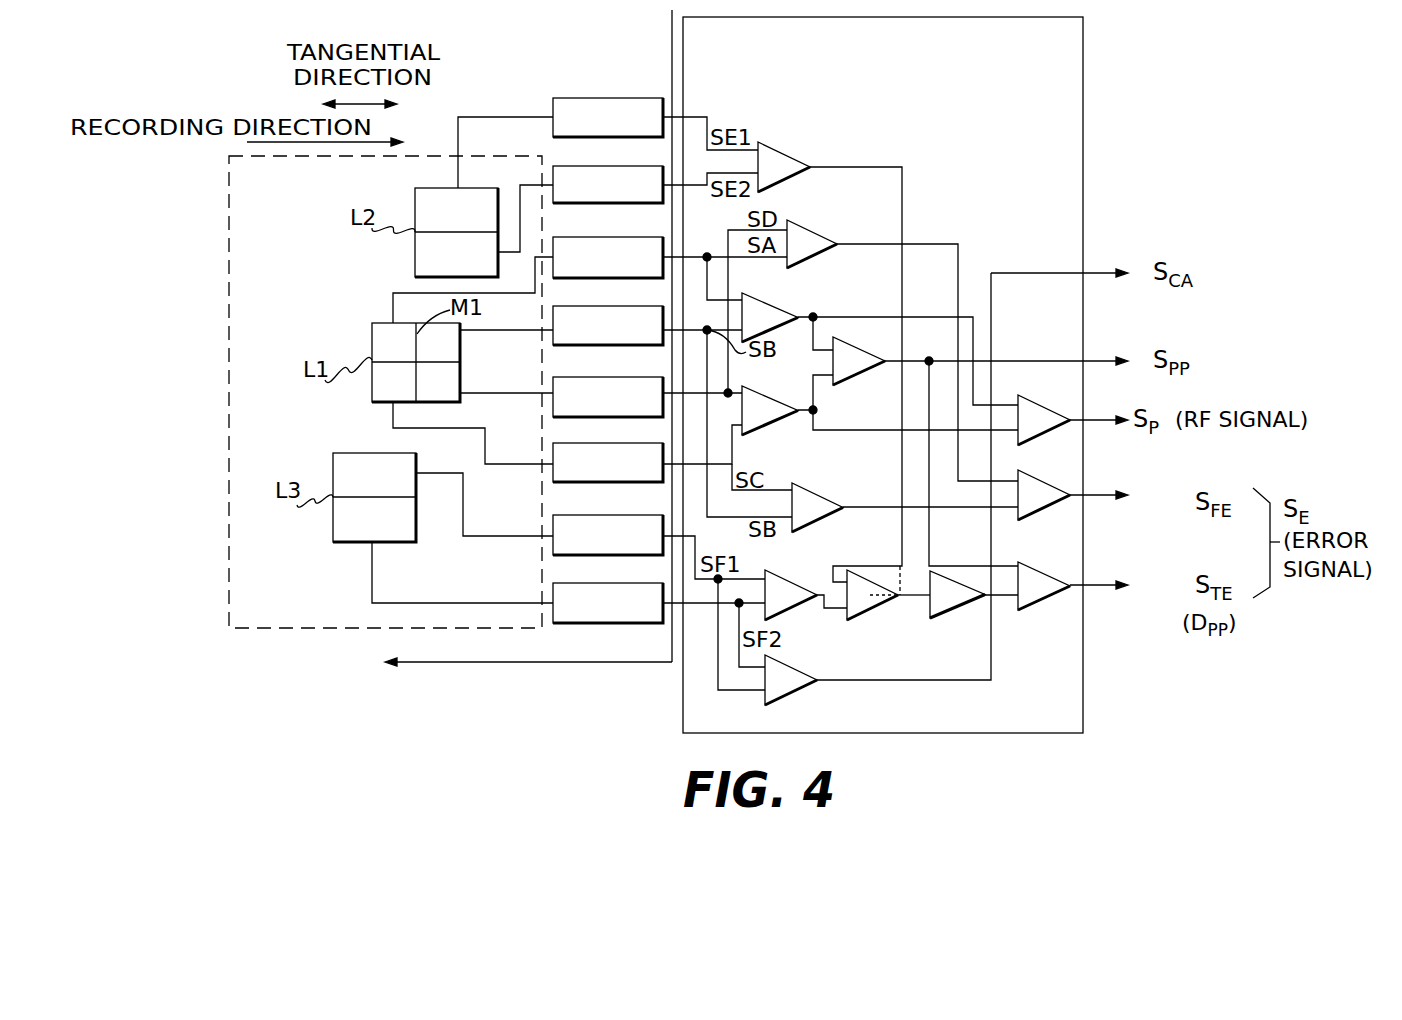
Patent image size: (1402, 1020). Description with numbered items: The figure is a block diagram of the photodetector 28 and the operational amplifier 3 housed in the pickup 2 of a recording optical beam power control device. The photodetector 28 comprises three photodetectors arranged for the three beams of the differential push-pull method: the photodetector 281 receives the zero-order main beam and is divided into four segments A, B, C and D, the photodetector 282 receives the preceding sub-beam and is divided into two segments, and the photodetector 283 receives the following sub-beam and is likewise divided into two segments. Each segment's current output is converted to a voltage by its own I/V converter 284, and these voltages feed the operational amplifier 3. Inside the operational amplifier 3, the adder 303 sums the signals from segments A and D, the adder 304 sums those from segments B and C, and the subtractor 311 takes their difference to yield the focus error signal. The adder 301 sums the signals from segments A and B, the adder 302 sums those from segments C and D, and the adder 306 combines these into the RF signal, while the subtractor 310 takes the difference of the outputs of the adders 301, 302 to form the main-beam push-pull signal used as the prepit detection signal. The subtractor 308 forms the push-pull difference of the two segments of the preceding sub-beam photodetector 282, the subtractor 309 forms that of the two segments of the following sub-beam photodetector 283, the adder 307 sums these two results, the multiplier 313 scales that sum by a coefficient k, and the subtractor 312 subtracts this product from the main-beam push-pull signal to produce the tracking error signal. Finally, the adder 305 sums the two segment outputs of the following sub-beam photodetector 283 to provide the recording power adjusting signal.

The pickup 2 is at (532, 664).
The operational amplifier 3 is at (1077, 118).
The photodetector 28 is at (338, 630).
The photodetector 281 is at (372, 327).
The photodetector 282 is at (415, 200).
The photodetector 283 is at (333, 455).
The I/V converter 284 is at (568, 102).
The adder 301 is at (775, 303).
The adder 302 is at (760, 395).
The adder 303 is at (820, 224).
The adder 304 is at (815, 493).
The adder 305 is at (795, 672).
The adder 306 is at (1050, 442).
The adder 307 is at (870, 620).
The subtractor 308 is at (797, 147).
The subtractor 309 is at (795, 572).
The subtractor 310 is at (845, 388).
The subtractor 311 is at (1050, 520).
The subtractor 312 is at (1048, 605).
The multiplier 313 is at (940, 618).